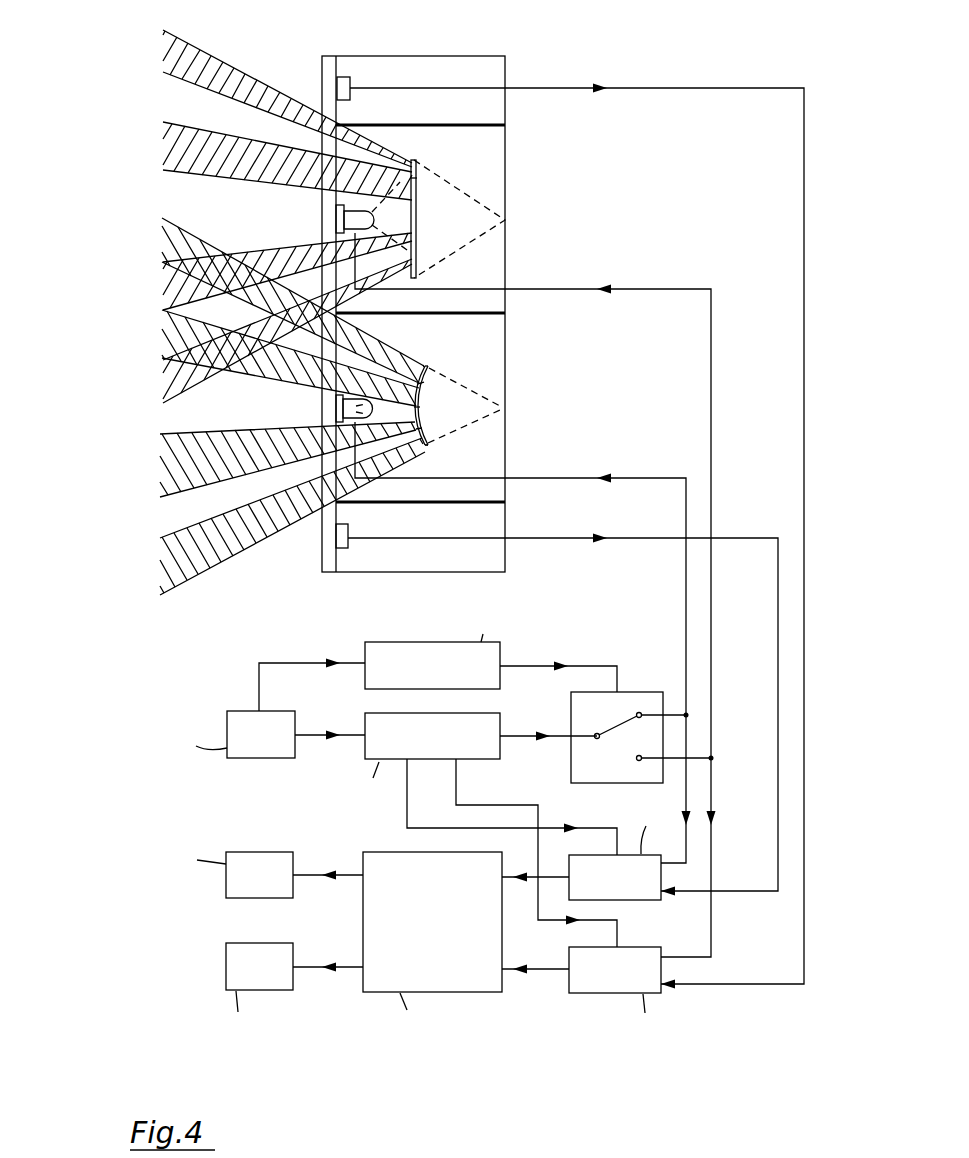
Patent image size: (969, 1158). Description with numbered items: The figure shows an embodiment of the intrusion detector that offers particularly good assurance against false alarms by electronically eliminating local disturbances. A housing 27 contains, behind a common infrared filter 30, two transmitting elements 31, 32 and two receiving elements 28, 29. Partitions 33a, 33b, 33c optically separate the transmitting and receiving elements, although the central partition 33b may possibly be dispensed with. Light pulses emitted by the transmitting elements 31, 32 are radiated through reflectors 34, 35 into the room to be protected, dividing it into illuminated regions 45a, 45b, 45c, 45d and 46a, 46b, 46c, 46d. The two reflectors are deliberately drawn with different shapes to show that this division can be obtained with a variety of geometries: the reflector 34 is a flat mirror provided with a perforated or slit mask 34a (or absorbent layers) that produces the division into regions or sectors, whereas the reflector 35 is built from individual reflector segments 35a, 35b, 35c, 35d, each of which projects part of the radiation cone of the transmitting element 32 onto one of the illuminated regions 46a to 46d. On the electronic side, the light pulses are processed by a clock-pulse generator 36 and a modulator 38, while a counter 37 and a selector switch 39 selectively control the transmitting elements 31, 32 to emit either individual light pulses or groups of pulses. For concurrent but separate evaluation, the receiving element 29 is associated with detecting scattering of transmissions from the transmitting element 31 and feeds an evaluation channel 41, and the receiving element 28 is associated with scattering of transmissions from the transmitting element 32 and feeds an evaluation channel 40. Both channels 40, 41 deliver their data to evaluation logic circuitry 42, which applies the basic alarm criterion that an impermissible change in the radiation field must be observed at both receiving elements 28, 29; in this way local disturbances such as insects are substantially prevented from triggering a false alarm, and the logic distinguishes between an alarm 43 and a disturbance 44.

The housing 27 is at (503, 62).
The receiving element 28 is at (346, 78).
The receiving element 29 is at (345, 546).
The common infrared filter 30 is at (326, 546).
The transmitting element 31 is at (344, 217).
The transmitting element 32 is at (343, 408).
The partition 33a is at (506, 125).
The central partition 33b is at (506, 313).
The partition 33c is at (506, 502).
The reflector 34 is at (417, 220).
The perforated or slit mask 34a is at (417, 174).
The reflector 35 is at (429, 366).
The reflector segment 35a is at (427, 370).
The reflector segment 35b is at (418, 392).
The reflector segment 35c is at (420, 416).
The reflector segment 35d is at (426, 438).
The clock-pulse generator 36 is at (280, 750).
The counter 37 is at (451, 682).
The modulator 38 is at (451, 753).
The selector switch 39 is at (627, 700).
The evaluation channel 40 is at (633, 986).
The evaluation channel 41 is at (633, 895).
The evaluation logic circuitry 42 is at (450, 932).
The alarm 43 is at (278, 893).
The disturbance 44 is at (278, 984).
The illuminated region 45a is at (262, 98).
The illuminated region 45b is at (262, 161).
The illuminated region 45c is at (262, 271).
The illuminated region 45d is at (262, 331).
The illuminated region 46a is at (268, 301).
The illuminated region 46b is at (266, 358).
The illuminated region 46c is at (264, 459).
The illuminated region 46d is at (269, 516).